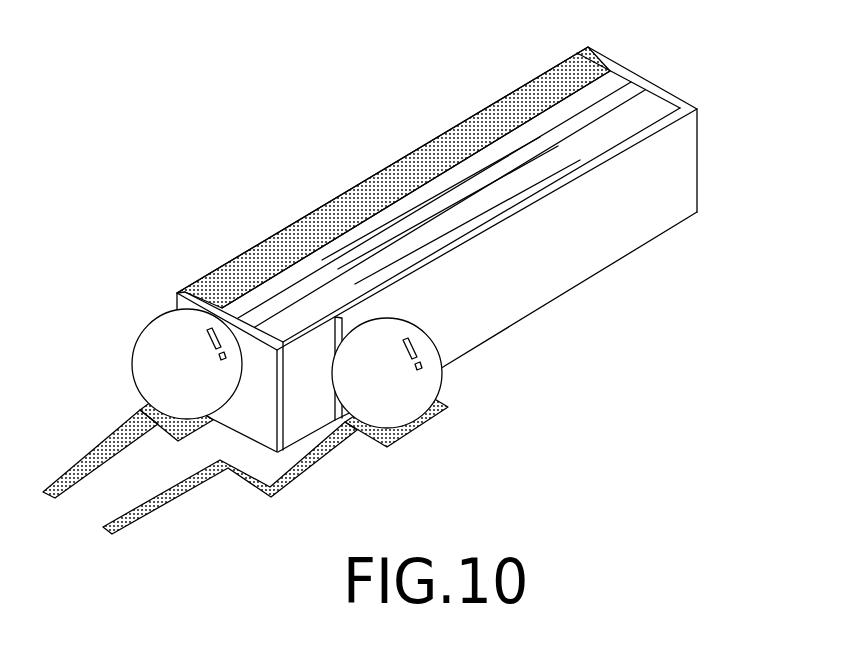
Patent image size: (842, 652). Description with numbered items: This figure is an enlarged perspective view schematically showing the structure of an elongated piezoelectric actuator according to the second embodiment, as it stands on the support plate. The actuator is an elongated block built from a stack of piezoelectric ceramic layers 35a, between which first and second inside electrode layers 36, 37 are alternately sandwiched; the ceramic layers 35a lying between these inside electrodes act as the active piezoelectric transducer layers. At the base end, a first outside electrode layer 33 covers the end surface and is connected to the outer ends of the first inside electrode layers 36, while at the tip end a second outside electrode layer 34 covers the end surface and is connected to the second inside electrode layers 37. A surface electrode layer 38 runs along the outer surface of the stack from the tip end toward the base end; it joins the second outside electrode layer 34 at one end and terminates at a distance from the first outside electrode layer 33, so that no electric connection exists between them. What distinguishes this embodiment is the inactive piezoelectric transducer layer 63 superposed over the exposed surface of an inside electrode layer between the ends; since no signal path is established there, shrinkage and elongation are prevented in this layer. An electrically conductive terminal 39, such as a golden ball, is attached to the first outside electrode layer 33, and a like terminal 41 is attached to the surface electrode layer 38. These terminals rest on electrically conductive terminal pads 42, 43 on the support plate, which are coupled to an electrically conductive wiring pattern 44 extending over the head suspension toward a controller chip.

The first outside electrode layer 33 is at (283, 452).
The second outside electrode layer 34 is at (657, 86).
The piezoelectric ceramic layers 35a is at (441, 220).
The first inside electrode layers 36 is at (292, 259).
The second inside electrode layers 37 is at (575, 103).
The surface electrode layer 38 is at (537, 298).
The electrically conductive terminal 39 is at (153, 327).
The electrically conductive terminal 41 is at (443, 373).
The electrically conductive terminal pad 42 is at (140, 412).
The electrically conductive terminal pad 43 is at (413, 432).
The electrically conductive wiring pattern 44 is at (110, 466).
The inactive piezoelectric transducer layer 63 is at (418, 155).